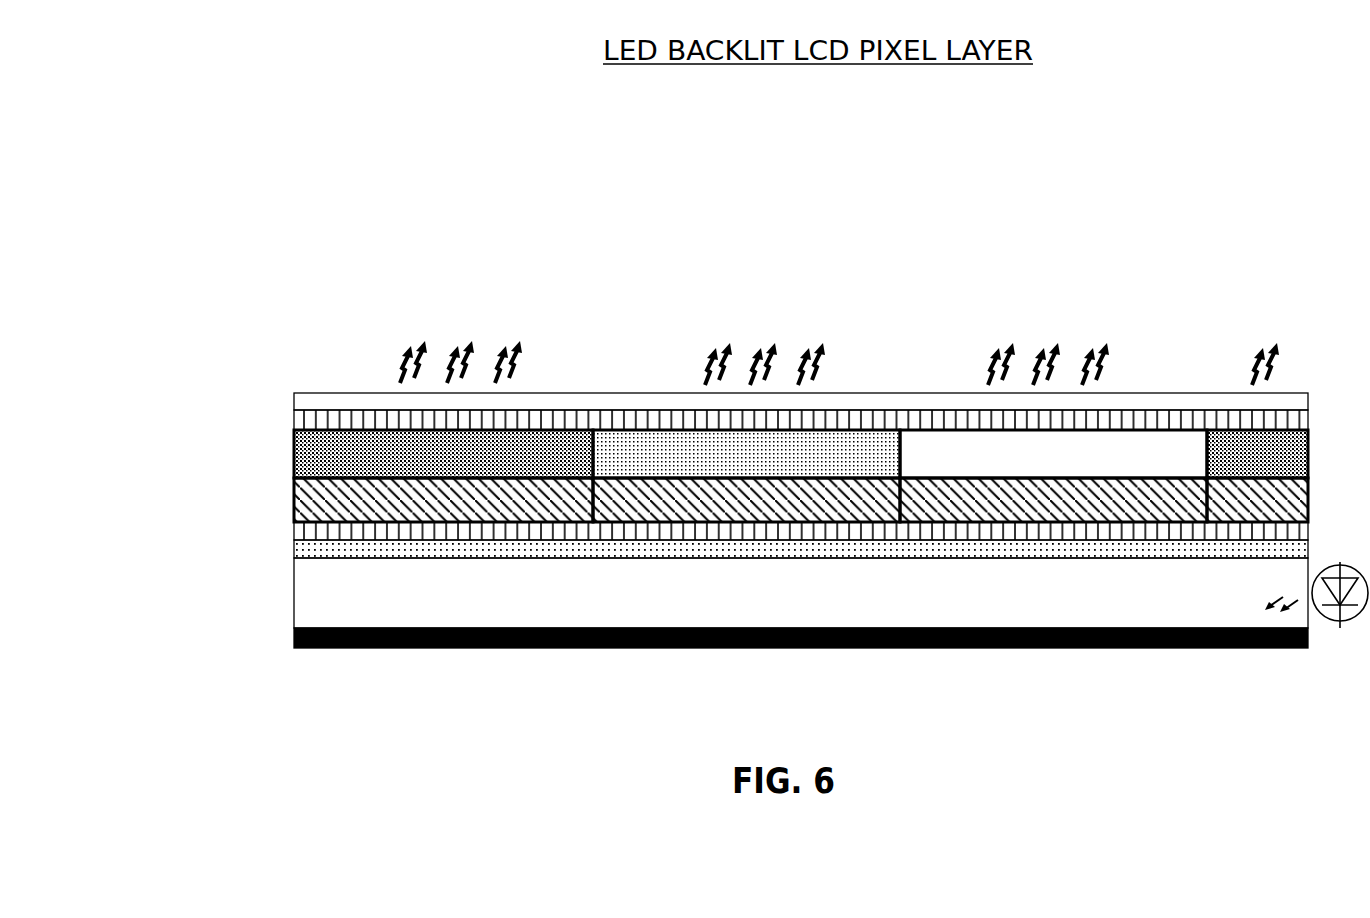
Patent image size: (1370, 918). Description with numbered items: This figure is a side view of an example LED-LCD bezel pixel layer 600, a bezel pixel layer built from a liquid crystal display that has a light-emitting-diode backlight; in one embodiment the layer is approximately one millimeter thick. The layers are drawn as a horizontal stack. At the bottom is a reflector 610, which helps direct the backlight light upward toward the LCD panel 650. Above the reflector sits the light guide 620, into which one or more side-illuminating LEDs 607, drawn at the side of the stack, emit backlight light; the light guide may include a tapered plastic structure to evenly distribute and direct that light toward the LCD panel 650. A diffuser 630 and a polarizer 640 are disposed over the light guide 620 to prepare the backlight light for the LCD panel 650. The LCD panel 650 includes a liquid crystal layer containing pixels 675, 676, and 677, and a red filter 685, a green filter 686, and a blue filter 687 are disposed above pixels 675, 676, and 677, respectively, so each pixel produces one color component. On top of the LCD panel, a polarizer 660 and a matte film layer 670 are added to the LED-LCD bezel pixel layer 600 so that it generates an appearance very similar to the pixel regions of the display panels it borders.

The LED-LCD bezel pixel layer 600 is at (440, 135).
The side-illuminating LED 607 is at (1328, 633).
The reflector 610 is at (294, 640).
The light guide 620 is at (322, 595).
The diffuser 630 is at (300, 546).
The polarizer 640 is at (293, 535).
The LCD panel 650 is at (706, 476).
The polarizer 660 is at (293, 420).
The matte film layer 670 is at (300, 403).
The pixel 675 is at (498, 511).
The pixel 676 is at (800, 511).
The pixel 677 is at (1103, 512).
The red filter 685 is at (507, 464).
The green filter 686 is at (807, 466).
The blue filter 687 is at (1113, 466).